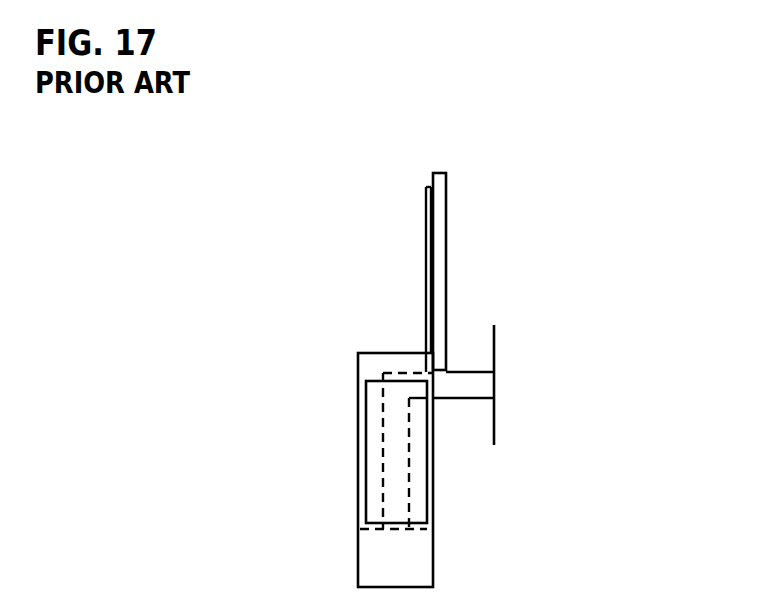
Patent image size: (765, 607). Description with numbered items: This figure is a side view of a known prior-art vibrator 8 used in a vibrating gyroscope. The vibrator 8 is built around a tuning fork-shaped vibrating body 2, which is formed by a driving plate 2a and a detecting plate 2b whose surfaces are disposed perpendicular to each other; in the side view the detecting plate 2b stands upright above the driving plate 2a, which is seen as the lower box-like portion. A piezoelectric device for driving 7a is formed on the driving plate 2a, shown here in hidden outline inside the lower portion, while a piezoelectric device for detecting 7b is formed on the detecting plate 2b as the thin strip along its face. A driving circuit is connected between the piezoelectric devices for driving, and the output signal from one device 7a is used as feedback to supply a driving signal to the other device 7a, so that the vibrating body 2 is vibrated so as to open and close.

The vibrating body 2 is at (452, 175).
The driving plate 2a is at (368, 356).
The detecting plate 2b is at (440, 233).
The piezoelectric device for driving 7a is at (373, 457).
The piezoelectric device for detecting 7b is at (428, 250).
The vibrator 8 is at (238, 186).